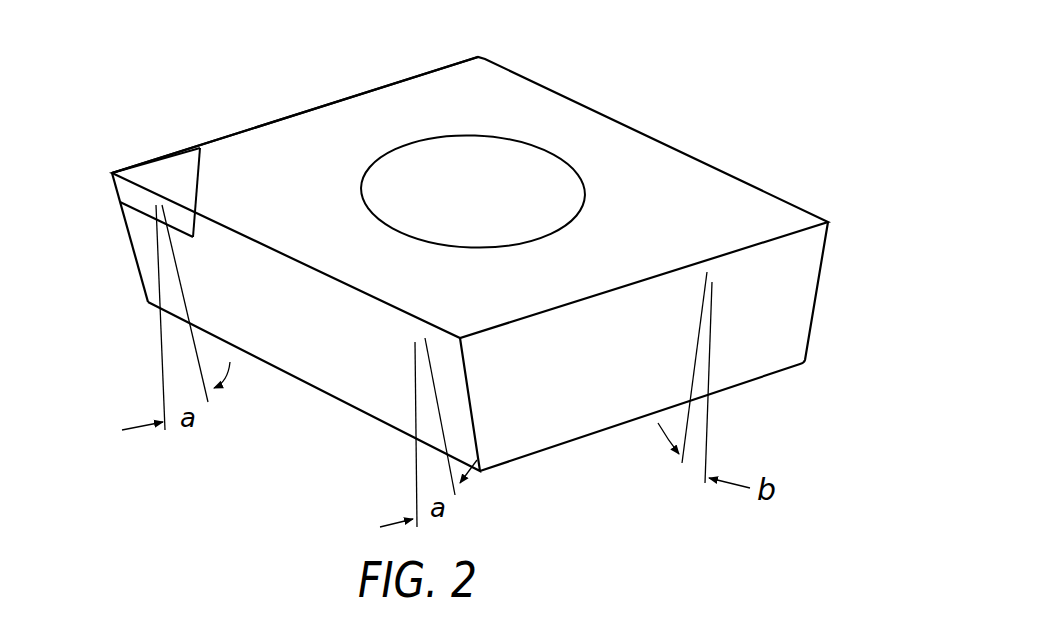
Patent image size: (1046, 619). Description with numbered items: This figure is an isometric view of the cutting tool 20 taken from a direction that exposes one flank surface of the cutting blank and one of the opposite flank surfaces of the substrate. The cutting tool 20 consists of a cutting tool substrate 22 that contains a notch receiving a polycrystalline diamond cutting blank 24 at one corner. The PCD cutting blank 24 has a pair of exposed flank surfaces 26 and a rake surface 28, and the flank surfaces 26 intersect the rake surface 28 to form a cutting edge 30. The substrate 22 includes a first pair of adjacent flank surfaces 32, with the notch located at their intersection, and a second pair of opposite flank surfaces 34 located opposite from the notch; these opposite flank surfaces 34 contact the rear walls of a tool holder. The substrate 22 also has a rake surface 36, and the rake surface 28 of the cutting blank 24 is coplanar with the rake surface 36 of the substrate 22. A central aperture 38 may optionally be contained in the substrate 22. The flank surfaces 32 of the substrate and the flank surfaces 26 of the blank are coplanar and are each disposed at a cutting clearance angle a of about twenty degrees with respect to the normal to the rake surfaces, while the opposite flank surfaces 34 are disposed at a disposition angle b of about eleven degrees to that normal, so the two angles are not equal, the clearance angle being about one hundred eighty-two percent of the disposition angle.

The cutting tool 20 is at (475, 239).
The cutting tool substrate 22 is at (680, 173).
The polycrystalline diamond cutting blank 24 is at (188, 168).
The flank surfaces 26 is at (145, 203).
The rake surface 28 is at (180, 162).
The cutting edge 30 is at (133, 157).
The first pair of adjacent flank surfaces 32 is at (287, 343).
The second pair of opposite flank surfaces 34 is at (785, 333).
The rake surface 36 is at (413, 95).
The central aperture 38 is at (517, 158).